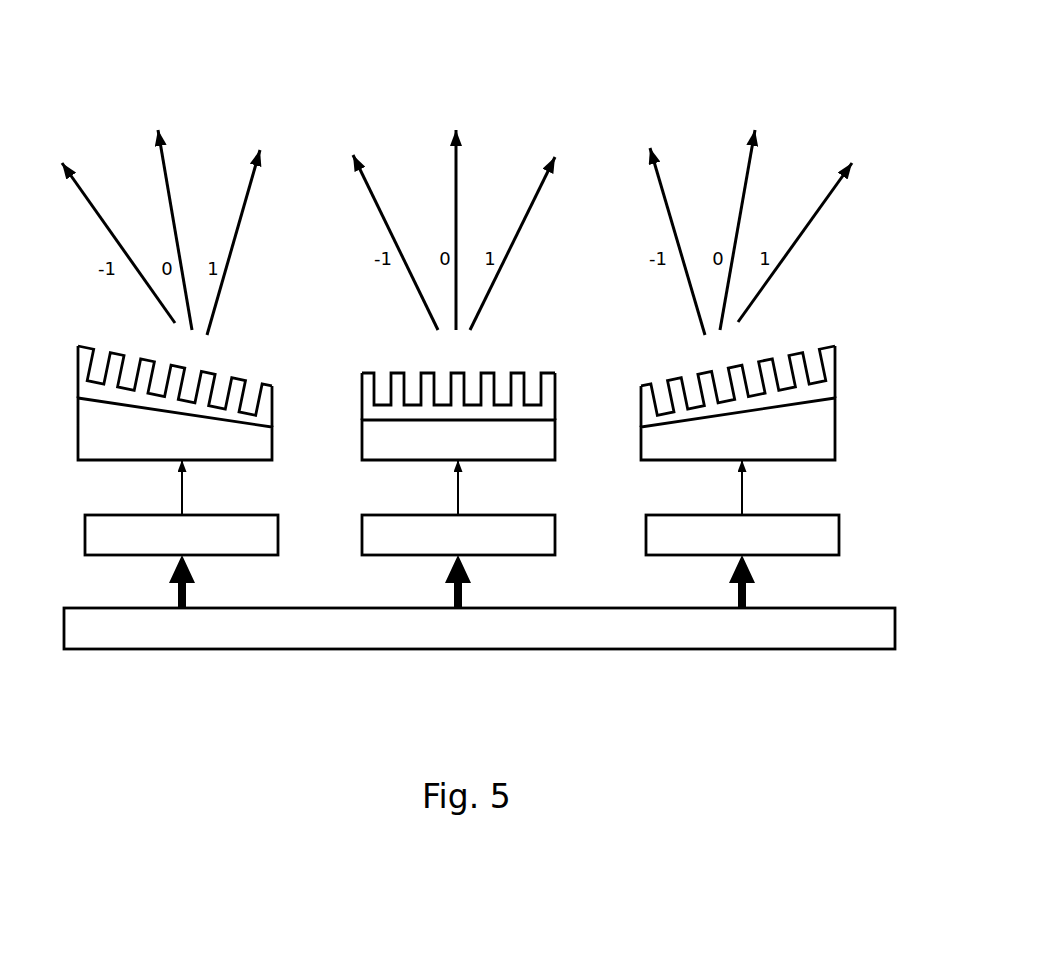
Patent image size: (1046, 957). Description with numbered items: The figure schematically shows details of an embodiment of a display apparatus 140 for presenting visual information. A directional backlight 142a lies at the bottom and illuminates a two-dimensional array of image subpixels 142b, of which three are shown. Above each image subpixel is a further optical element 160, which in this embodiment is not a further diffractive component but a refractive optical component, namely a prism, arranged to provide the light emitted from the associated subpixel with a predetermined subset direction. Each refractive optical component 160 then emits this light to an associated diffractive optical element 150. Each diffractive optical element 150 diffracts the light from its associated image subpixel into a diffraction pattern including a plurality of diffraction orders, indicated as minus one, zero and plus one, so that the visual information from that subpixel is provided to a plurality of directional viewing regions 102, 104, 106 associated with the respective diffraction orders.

The directional viewing region 102 is at (644, 139).
The directional viewing region 104 is at (747, 121).
The directional viewing region 106 is at (860, 151).
The display apparatus 140 is at (163, 680).
The directional backlight 142a is at (414, 646).
The image subpixels 142b is at (877, 534).
The diffractive optical element 150 is at (877, 410).
The refractive optical component 160 is at (877, 440).